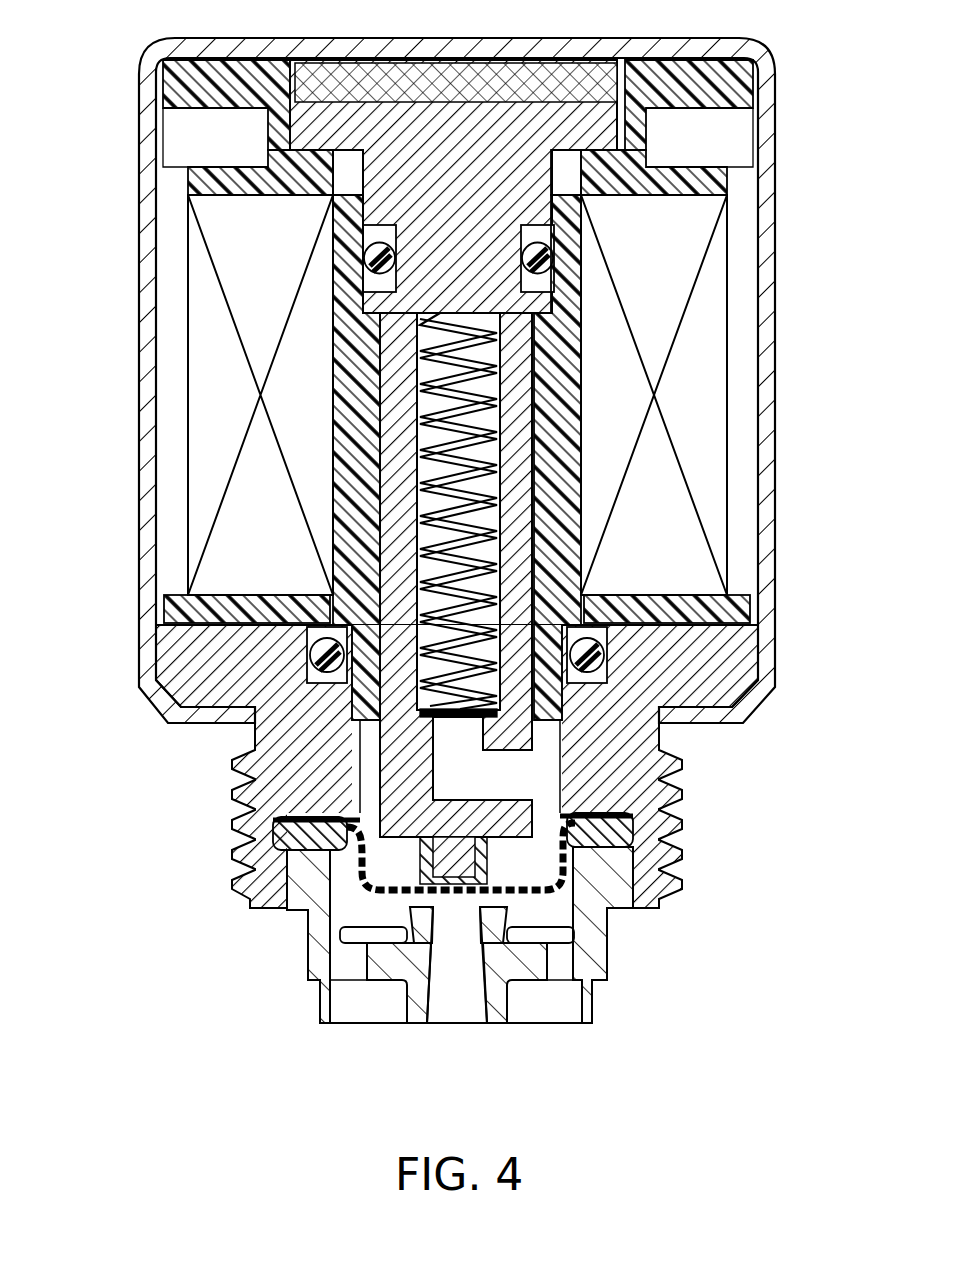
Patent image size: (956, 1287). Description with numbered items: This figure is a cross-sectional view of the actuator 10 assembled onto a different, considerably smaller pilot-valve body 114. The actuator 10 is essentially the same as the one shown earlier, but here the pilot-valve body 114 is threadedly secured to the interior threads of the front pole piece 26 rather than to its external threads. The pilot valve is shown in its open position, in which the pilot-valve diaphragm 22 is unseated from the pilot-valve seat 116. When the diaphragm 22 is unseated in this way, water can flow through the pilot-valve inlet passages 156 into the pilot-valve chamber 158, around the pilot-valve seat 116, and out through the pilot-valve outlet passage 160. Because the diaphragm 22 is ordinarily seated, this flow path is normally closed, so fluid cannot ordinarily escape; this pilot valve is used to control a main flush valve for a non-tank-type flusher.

The actuator 10 is at (103, 44).
The pilot-valve diaphragm 22 is at (360, 897).
The front pole piece 26 is at (662, 747).
The pilot-valve body 114 is at (308, 967).
The pilot-valve seat 116 is at (437, 900).
The pilot-valve inlet passages 156 is at (348, 963).
The pilot-valve chamber 158 is at (572, 923).
The pilot-valve outlet passage 160 is at (470, 1007).